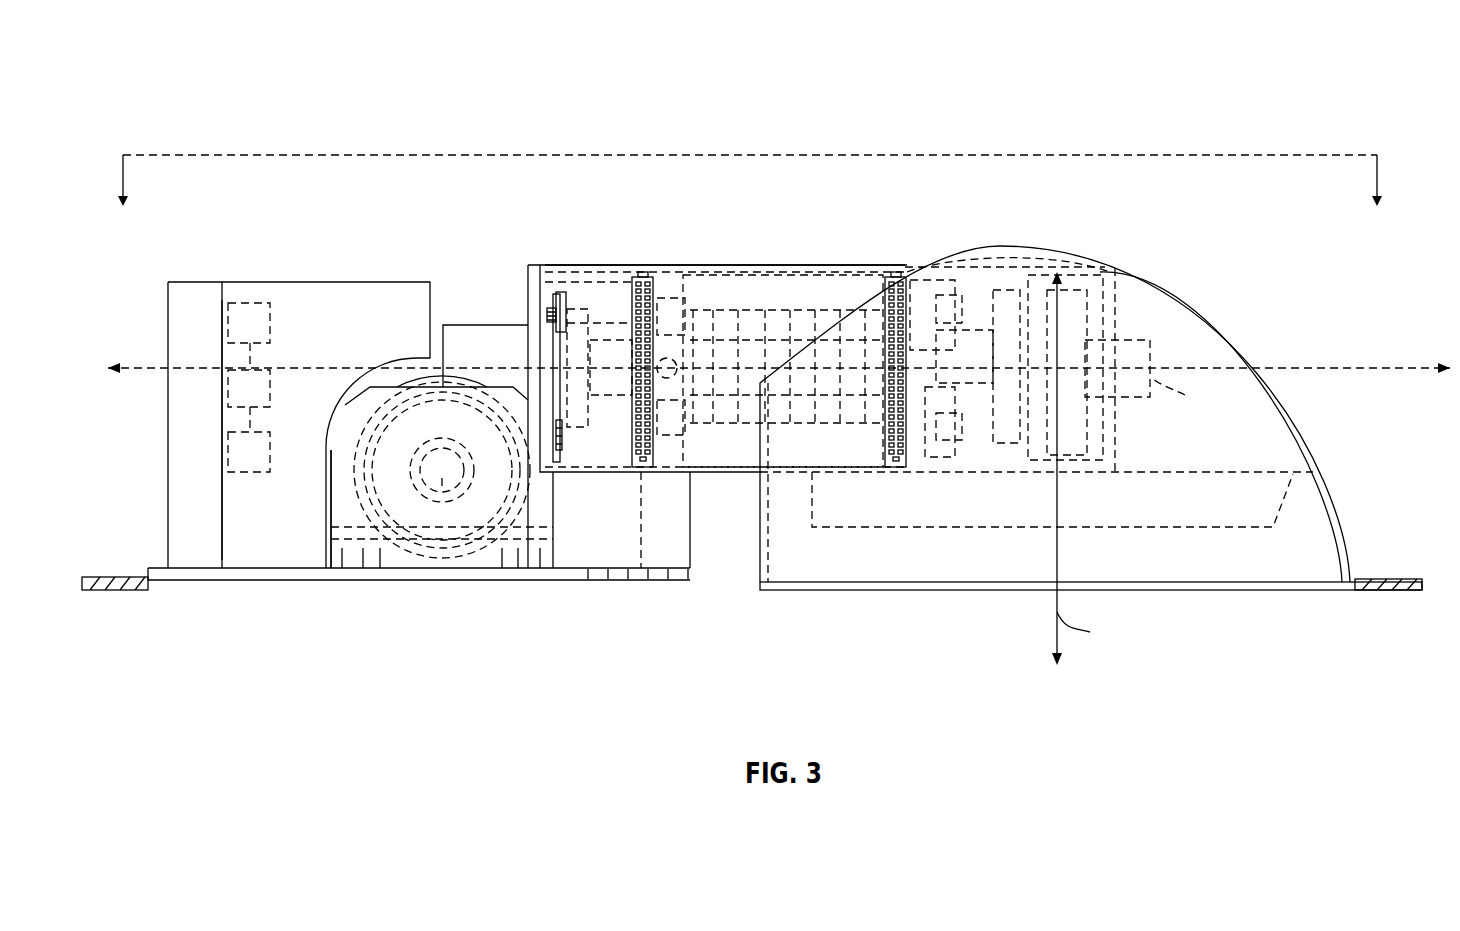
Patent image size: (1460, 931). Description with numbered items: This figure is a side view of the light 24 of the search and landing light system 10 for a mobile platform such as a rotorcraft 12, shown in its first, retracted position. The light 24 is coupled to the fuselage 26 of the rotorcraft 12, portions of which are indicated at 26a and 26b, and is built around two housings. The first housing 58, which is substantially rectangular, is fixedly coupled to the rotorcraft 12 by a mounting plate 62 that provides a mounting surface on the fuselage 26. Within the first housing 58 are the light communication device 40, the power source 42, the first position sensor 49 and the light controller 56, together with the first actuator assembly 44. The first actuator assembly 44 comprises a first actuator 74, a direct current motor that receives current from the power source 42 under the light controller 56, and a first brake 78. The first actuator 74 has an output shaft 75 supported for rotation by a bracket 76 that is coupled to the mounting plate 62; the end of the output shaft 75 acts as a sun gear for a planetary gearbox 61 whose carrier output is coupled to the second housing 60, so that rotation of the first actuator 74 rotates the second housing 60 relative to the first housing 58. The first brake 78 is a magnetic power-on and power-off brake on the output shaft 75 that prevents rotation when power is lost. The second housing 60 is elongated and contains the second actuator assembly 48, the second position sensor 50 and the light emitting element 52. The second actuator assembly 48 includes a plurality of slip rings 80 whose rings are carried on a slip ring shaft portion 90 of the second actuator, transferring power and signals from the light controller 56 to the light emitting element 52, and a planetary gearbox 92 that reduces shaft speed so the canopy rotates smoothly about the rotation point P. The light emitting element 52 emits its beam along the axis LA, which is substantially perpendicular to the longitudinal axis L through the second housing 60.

The search and landing light system 10 is at (1225, 70).
The rotorcraft 12 is at (754, 594).
The light 24 is at (1143, 136).
The fuselage 26 is at (98, 577).
The base plate end portion 26a is at (1385, 578).
The base plate portion 26b is at (1410, 591).
The light communication device 40 is at (299, 424).
The power source 42 is at (276, 308).
The first actuator assembly 44 is at (418, 343).
The second actuator assembly 48 is at (808, 262).
The first position sensor 49 is at (413, 490).
The second position sensor 50 is at (560, 300).
The light emitting element 52 is at (970, 528).
The light controller 56 is at (222, 378).
The first housing 58 is at (702, 392).
The second housing 60 is at (1199, 268).
The planetary gearbox 61 is at (360, 527).
The mounting plate 62 is at (600, 581).
The first actuator 74 is at (425, 545).
The output shaft 75 is at (447, 490).
The bracket 76 is at (328, 553).
The first brake 78 is at (462, 540).
The slip rings 80 is at (730, 295).
The slip ring shaft portion 90 is at (1055, 421).
The gearbox 92 is at (1060, 262).